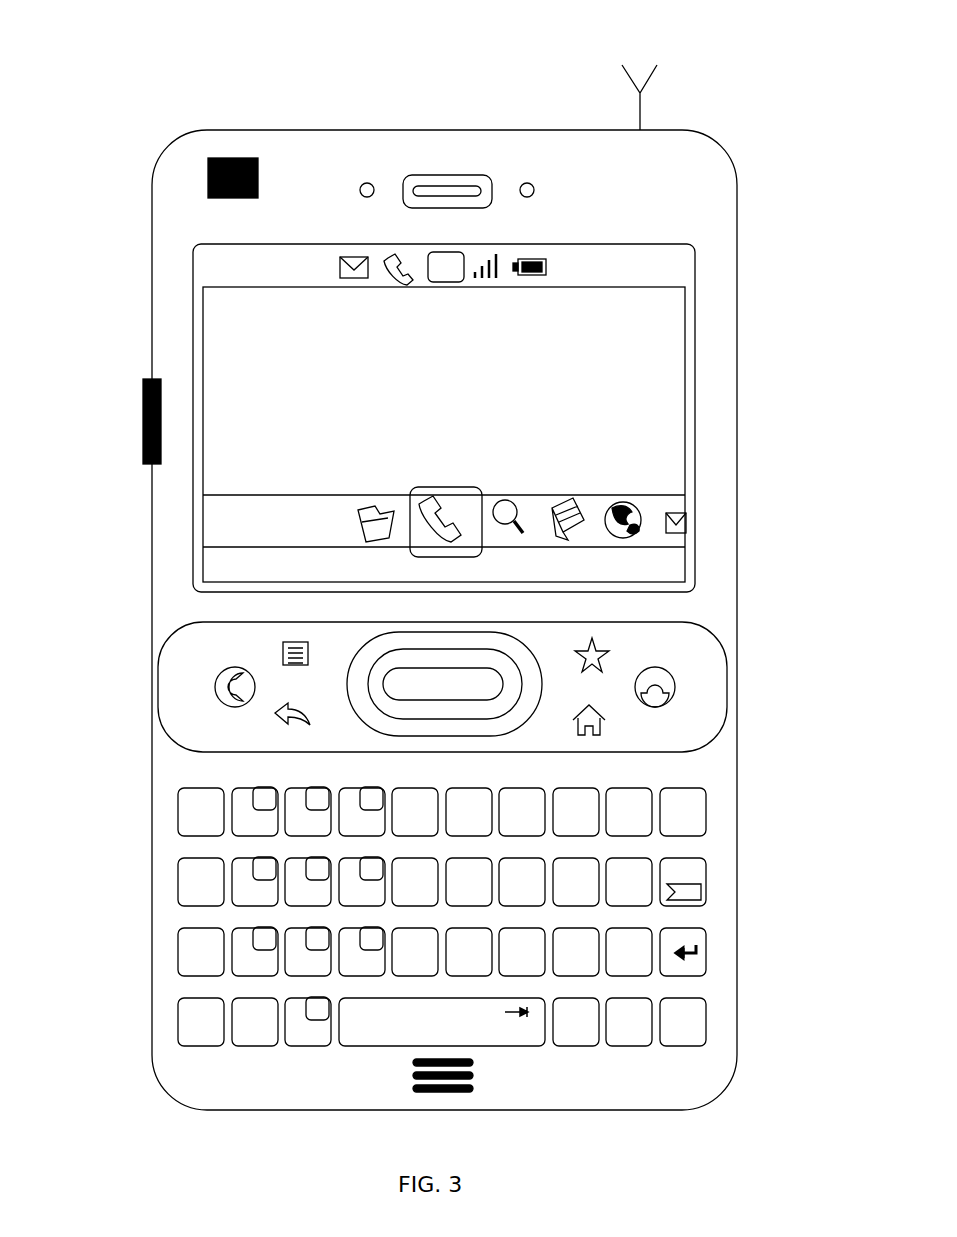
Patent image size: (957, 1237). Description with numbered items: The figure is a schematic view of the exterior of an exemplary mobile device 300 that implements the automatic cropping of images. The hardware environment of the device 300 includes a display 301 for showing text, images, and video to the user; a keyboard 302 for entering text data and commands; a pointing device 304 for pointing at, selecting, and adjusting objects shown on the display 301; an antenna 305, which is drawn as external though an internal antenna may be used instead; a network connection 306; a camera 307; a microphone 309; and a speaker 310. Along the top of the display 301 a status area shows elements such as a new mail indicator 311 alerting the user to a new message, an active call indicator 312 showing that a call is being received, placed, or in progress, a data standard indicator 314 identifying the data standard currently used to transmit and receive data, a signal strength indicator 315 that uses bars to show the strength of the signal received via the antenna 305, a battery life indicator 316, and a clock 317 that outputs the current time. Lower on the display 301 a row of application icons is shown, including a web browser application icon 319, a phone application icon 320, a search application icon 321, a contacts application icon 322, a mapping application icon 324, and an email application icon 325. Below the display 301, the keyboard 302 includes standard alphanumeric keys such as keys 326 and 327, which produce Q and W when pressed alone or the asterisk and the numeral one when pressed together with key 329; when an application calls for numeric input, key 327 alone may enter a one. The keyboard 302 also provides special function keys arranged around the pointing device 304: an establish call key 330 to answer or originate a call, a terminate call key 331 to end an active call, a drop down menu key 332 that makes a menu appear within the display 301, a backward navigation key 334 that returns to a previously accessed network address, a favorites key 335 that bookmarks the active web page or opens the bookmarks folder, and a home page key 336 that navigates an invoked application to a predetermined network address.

The device 300 is at (100, 50).
The display 301 is at (241, 339).
The keyboard 302 is at (675, 1075).
The pointing device 304 is at (458, 668).
The antenna 305 is at (640, 112).
The network connection 306 is at (143, 428).
The camera 307 is at (258, 180).
The microphone 309 is at (463, 1092).
The speaker 310 is at (450, 176).
The new mail indicator 311 is at (340, 262).
The active call indicator 312 is at (390, 258).
The data standard indicator 314 is at (433, 252).
The signal strength indicator 315 is at (486, 262).
The battery life indicator 316 is at (530, 260).
The clock 317 is at (610, 262).
The web browser application icon 319 is at (368, 512).
The phone application icon 320 is at (446, 487).
The search application icon 321 is at (505, 500).
The contacts application icon 322 is at (565, 505).
The mapping application icon 324 is at (620, 500).
The email application icon 325 is at (672, 512).
The key 326 is at (188, 802).
The key 327 is at (276, 802).
The key 329 is at (707, 1032).
The establish call key 330 is at (221, 673).
The terminate call key 331 is at (660, 668).
The drop down menu key 332 is at (292, 642).
The backward navigation key 334 is at (275, 713).
The favorites key 335 is at (596, 640).
The home page key 336 is at (605, 720).